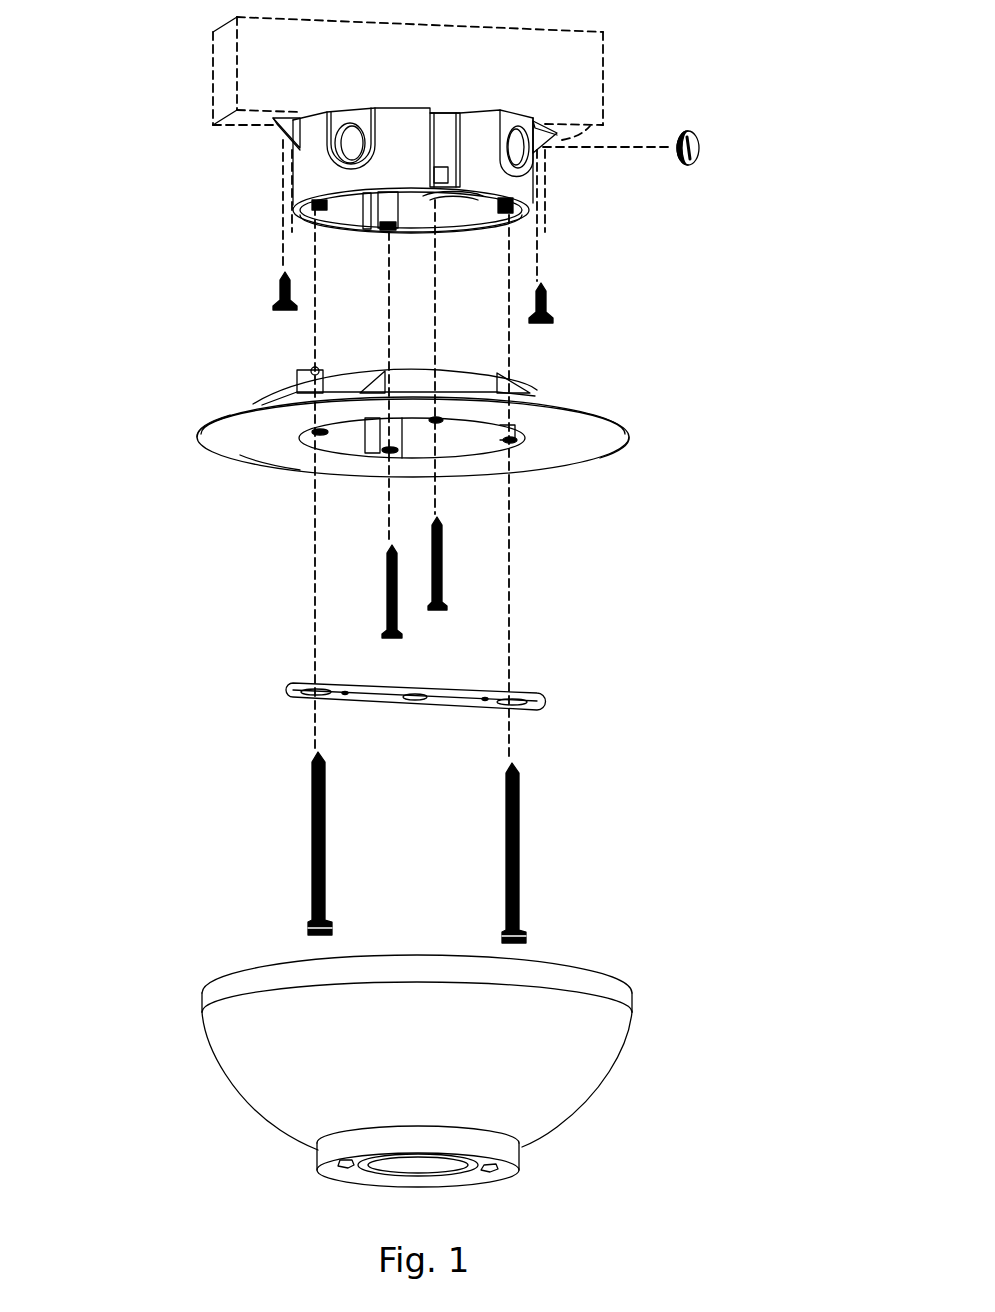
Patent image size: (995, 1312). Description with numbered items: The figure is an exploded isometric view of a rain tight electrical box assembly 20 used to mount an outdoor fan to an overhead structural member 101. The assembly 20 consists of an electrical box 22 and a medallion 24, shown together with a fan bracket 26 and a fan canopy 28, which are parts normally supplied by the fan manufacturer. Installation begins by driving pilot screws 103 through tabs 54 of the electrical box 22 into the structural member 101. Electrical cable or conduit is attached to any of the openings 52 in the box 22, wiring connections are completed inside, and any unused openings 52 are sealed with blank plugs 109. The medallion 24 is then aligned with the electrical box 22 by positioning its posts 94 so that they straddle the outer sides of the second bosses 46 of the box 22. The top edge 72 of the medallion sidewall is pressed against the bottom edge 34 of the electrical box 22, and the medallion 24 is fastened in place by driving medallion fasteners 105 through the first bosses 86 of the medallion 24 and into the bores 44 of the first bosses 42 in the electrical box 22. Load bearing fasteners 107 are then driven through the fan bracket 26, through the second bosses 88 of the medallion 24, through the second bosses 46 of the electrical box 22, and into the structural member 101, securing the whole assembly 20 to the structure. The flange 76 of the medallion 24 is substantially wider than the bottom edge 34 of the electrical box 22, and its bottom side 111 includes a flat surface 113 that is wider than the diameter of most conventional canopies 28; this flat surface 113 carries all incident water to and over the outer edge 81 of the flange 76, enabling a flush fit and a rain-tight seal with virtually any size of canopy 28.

The rain tight electrical box assembly 20 is at (90, 100).
The structural member 101 is at (432, 83).
The electrical box 22 is at (522, 190).
The openings 52 is at (346, 138).
The tabs 54 is at (283, 128).
The blank plugs 109 is at (699, 140).
The second bosses 46 is at (517, 217).
The bores 44 is at (390, 225).
The first bosses 42 is at (390, 207).
The bottom edge 34 is at (477, 228).
The pilot screws 103 is at (550, 303).
The medallion 24 is at (607, 410).
The top edge 72 is at (466, 365).
The posts 94 is at (313, 372).
The outer edge 81 is at (200, 437).
The flange 76 is at (607, 441).
The flat surface 113 is at (270, 455).
The bottom side 111 is at (554, 447).
The first bosses 86 is at (392, 437).
The second bosses 88 is at (497, 437).
The medallion fasteners 105 is at (447, 565).
The fan bracket 26 is at (543, 690).
The load bearing fasteners 107 is at (520, 845).
The fan canopy 28 is at (605, 965).